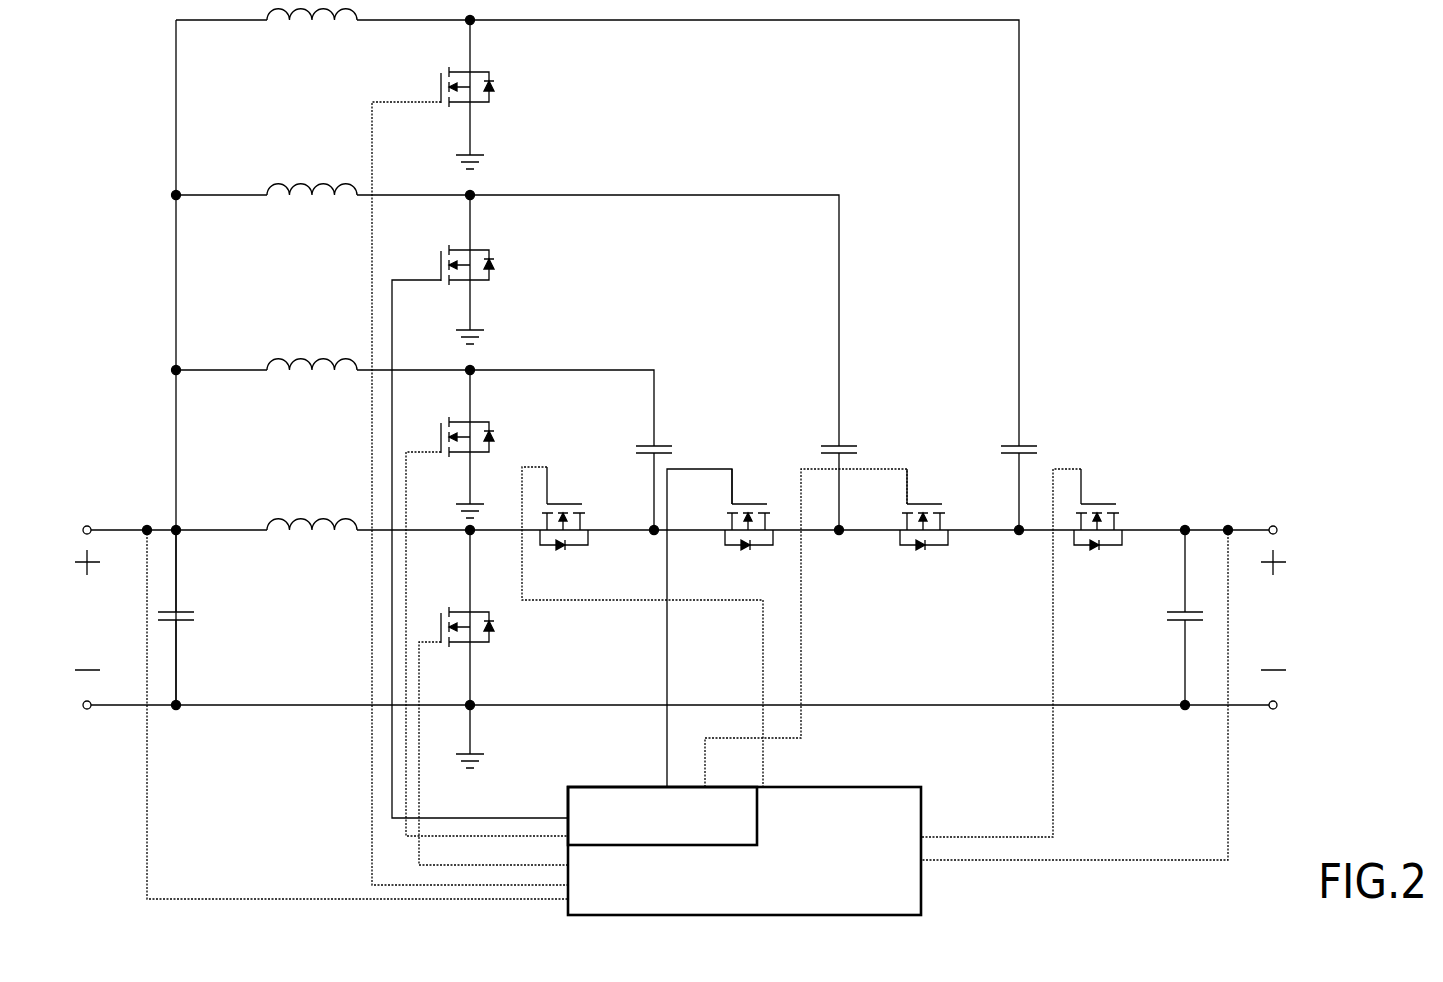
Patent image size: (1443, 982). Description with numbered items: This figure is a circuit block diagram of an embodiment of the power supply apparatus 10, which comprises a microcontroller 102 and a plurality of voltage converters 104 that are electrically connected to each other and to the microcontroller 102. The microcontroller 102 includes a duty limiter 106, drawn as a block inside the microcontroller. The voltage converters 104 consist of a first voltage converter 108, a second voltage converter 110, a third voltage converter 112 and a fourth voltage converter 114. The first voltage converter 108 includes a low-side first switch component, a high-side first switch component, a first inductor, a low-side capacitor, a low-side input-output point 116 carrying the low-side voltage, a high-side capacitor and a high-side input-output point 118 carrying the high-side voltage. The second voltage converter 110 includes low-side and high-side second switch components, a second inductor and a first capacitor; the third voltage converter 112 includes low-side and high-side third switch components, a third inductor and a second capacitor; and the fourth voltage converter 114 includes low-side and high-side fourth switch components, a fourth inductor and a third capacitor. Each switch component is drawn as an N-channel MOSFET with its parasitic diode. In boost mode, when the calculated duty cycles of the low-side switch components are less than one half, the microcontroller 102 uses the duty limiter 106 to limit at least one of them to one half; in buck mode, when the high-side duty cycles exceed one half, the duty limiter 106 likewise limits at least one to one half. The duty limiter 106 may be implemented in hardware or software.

The power supply apparatus 10 is at (85, 108).
The microcontroller 102 is at (862, 797).
The voltage converters 104 is at (1134, 30).
The duty limiter 106 is at (608, 793).
The first voltage converter 108 is at (1125, 160).
The second voltage converter 110 is at (1283, 85).
The third voltage converter 112 is at (1282, 229).
The fourth voltage converter 114 is at (1298, 328).
The low-side input-output point 116 is at (325, 698).
The high-side input-output point 118 is at (1099, 679).